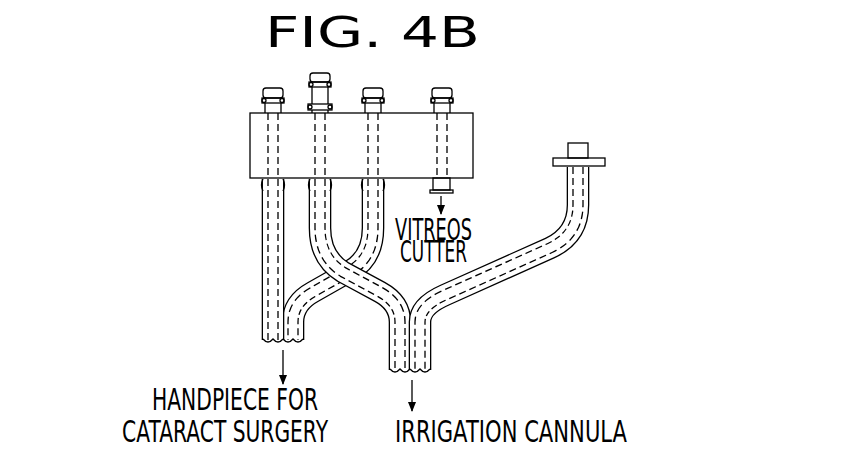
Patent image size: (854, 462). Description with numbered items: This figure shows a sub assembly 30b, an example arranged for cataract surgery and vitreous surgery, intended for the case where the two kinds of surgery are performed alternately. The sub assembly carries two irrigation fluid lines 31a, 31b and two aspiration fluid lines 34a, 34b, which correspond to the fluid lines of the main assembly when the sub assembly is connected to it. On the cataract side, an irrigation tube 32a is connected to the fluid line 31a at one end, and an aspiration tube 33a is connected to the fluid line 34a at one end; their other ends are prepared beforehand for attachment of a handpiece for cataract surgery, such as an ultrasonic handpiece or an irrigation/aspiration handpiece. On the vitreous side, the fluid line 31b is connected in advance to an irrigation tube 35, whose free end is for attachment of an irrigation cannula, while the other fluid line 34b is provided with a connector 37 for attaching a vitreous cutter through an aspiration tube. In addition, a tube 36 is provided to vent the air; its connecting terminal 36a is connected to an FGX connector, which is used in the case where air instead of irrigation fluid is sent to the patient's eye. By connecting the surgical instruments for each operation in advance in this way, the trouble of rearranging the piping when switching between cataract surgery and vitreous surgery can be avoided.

The sub assembly 30b is at (210, 157).
The irrigation fluid line 31a is at (273, 152).
The irrigation fluid line 31b is at (320, 150).
The irrigation tube 32a is at (273, 293).
The aspiration tube 33a is at (325, 287).
The aspiration fluid line 34a is at (372, 152).
The aspiration fluid line 34b is at (442, 147).
The irrigation tube 35 is at (390, 298).
The tube 36 is at (453, 287).
The connecting terminal 36a is at (580, 162).
The connector 37 is at (441, 186).